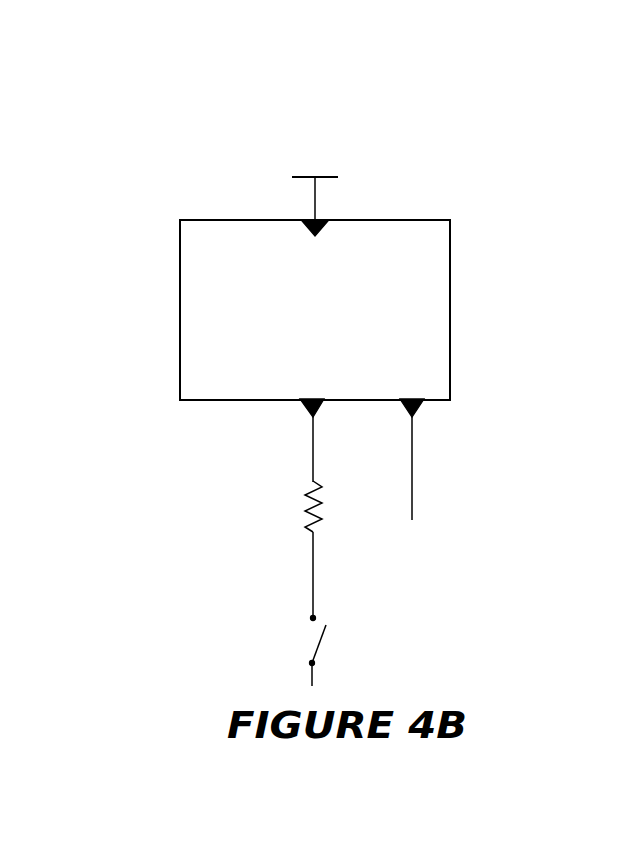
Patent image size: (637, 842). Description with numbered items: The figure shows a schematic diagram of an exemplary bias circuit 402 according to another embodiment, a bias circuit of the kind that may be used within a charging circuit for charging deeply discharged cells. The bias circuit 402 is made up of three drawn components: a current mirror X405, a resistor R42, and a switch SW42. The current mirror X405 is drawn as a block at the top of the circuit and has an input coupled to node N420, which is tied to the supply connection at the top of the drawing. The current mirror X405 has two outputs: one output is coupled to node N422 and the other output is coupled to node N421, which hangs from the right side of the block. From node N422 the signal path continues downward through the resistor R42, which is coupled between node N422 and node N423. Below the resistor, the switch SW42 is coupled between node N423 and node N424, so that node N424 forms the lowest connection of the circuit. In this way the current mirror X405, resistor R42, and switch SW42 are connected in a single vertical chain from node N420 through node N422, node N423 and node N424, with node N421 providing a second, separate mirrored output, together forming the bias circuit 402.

The bias circuit 402 is at (176, 80).
The current mirror X405 is at (130, 296).
The node N420 is at (283, 186).
The node N421 is at (423, 473).
The node N422 is at (285, 440).
The node N423 is at (296, 568).
The node N424 is at (295, 673).
The resistor R42 is at (300, 506).
The switch SW42 is at (297, 641).